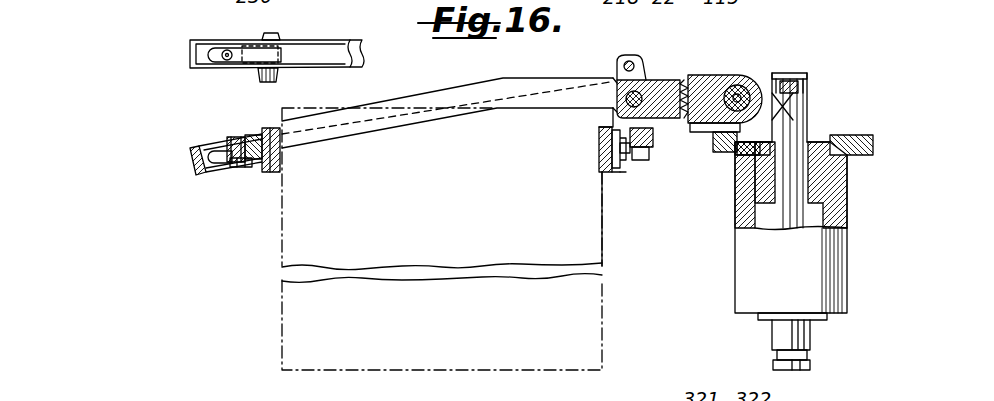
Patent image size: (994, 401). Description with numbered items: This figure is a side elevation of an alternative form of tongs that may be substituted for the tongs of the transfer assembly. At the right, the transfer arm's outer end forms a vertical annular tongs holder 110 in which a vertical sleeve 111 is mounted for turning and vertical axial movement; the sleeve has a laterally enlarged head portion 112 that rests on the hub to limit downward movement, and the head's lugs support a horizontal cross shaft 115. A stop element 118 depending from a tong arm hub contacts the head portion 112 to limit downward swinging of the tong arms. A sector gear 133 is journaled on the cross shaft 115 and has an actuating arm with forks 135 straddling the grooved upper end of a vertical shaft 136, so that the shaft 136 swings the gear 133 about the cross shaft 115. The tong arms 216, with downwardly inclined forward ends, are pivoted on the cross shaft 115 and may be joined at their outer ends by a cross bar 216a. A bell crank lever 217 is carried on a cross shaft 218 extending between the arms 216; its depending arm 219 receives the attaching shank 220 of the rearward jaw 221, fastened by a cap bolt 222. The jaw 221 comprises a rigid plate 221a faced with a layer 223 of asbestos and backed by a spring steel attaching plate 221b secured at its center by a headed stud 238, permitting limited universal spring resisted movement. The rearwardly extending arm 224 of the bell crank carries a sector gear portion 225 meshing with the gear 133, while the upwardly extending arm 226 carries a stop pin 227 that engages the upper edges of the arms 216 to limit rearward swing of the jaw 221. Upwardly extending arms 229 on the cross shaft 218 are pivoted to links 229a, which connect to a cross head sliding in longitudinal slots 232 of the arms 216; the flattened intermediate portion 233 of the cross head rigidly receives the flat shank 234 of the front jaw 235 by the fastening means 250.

The annular tongs holder 110 is at (847, 245).
The vertical sleeve 111 is at (817, 187).
The head portion 112 is at (864, 155).
The cross shaft 115 is at (770, 73).
The stop element 118 is at (724, 157).
The sector gear 133 is at (740, 68).
The forks 135 is at (781, 73).
The vertical shaft 136 is at (798, 110).
The tong arms 216 is at (552, 103).
The cross bar 216a is at (195, 164).
The bell crank lever 217 is at (612, 110).
The cross shaft 218 is at (613, 77).
The depending arm 219 is at (606, 125).
The attaching shank 220 is at (652, 155).
The rearward jaw 221 is at (596, 174).
The rigid plate 221a is at (622, 172).
The attaching plate 221b is at (613, 172).
The cap bolt 222 is at (654, 150).
The layer 223 is at (602, 162).
The rearwardly extending arm 224 is at (686, 80).
The sector gear portion 225 is at (672, 124).
The upwardly extending arm 226 is at (616, 72).
The stop pin 227 is at (641, 58).
The upwardly extending arms 229 is at (664, 78).
The links 229a is at (528, 78).
The longitudinal slots 232 is at (277, 58).
The flattened intermediate portion 233 is at (230, 138).
The flat shank 234 is at (253, 133).
The front jaw 235 is at (272, 176).
The headed stud 238 is at (603, 152).
The fastening means 250 is at (240, 168).